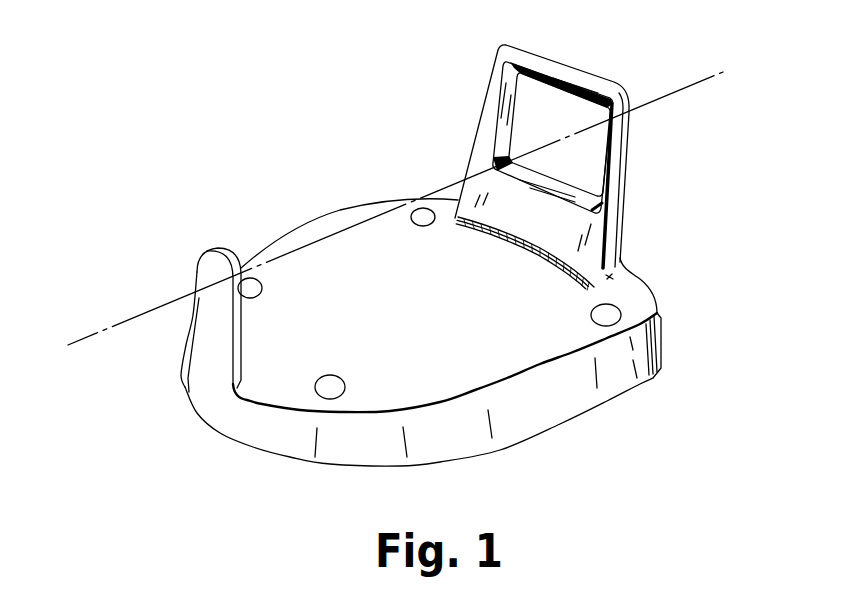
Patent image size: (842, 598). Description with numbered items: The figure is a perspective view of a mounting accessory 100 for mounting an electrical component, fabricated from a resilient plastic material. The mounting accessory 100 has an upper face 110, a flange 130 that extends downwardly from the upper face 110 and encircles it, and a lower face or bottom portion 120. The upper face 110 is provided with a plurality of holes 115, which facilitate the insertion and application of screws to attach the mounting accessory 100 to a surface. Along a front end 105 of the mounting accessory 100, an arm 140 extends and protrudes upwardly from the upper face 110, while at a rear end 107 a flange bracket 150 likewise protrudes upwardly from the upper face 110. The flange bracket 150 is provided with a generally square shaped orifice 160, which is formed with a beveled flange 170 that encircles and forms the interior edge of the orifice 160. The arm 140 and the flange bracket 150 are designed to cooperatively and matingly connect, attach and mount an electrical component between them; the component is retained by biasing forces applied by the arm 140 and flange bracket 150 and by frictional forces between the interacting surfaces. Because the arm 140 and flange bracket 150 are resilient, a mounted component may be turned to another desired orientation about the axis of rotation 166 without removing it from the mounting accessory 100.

The mounting accessory 100 is at (268, 181).
The front end 105 is at (215, 402).
The rear end 107 is at (620, 262).
The upper face 110 is at (338, 240).
The holes 115 is at (423, 215).
The lower face or bottom portion 120 is at (580, 418).
The flange 130 is at (655, 340).
The arm 140 is at (208, 272).
The flange bracket 150 is at (617, 237).
The orifice 160 is at (567, 103).
The axis of rotation 166 is at (687, 90).
The beveled flange 170 is at (519, 62).